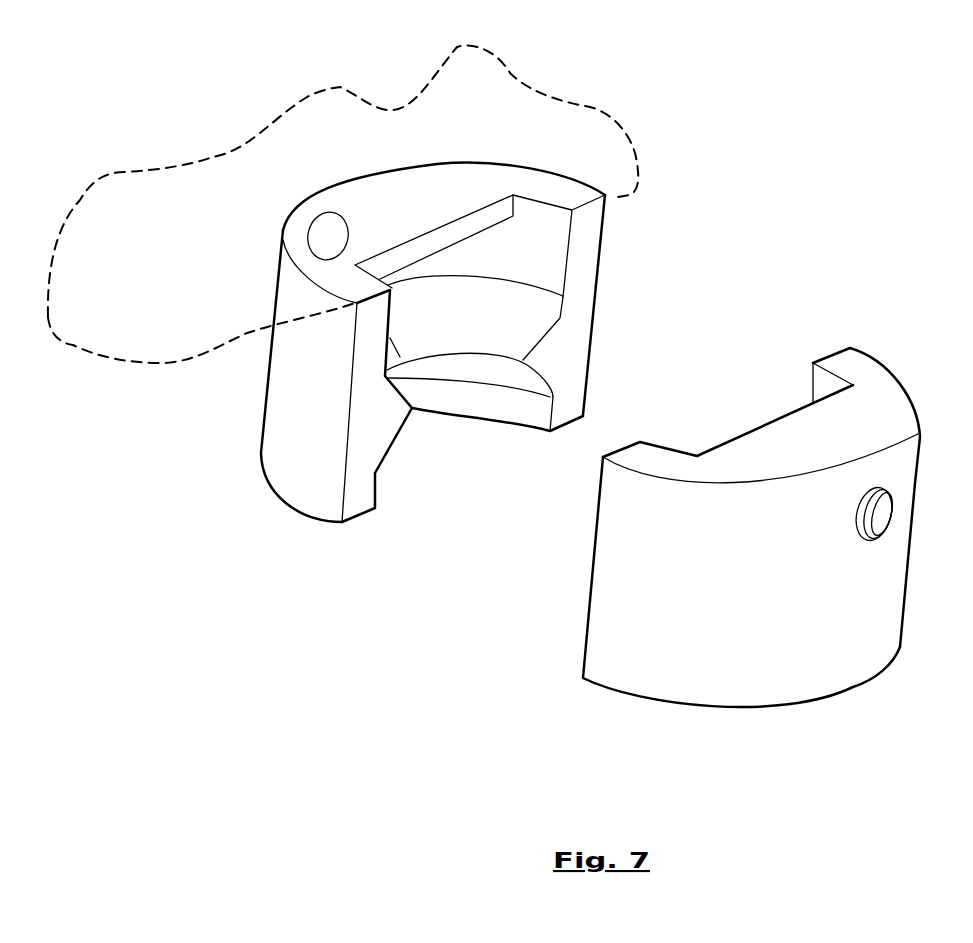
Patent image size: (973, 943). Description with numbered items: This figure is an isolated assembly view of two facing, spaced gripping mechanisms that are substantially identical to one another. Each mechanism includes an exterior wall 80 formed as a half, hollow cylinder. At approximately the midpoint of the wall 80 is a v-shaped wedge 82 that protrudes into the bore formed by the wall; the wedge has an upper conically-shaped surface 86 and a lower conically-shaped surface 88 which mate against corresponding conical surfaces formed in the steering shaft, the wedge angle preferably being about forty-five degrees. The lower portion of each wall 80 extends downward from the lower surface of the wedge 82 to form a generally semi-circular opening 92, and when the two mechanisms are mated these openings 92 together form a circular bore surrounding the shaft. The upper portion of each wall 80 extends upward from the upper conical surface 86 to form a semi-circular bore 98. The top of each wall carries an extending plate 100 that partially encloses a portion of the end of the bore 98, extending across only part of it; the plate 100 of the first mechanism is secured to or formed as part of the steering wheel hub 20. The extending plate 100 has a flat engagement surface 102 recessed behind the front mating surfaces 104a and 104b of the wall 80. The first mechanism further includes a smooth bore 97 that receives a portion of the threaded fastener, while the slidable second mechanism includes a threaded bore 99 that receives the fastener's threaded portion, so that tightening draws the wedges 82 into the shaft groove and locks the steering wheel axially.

The steering wheel hub 20 is at (338, 78).
The exterior wall 80 is at (362, 428).
The v-shaped wedge 82 is at (537, 365).
The upper conically-shaped surface 86 is at (433, 327).
The lower conically-shaped surface 88 is at (452, 362).
The semi-circular opening 92 is at (528, 405).
The smooth bore 97 is at (312, 250).
The semi-circular bore 98 is at (557, 243).
The threaded bore 99 is at (880, 516).
The extending plate 100 is at (475, 192).
The flat engagement surface 102 is at (412, 246).
The front mating surface 104a is at (365, 360).
The front mating surface 104b is at (580, 305).